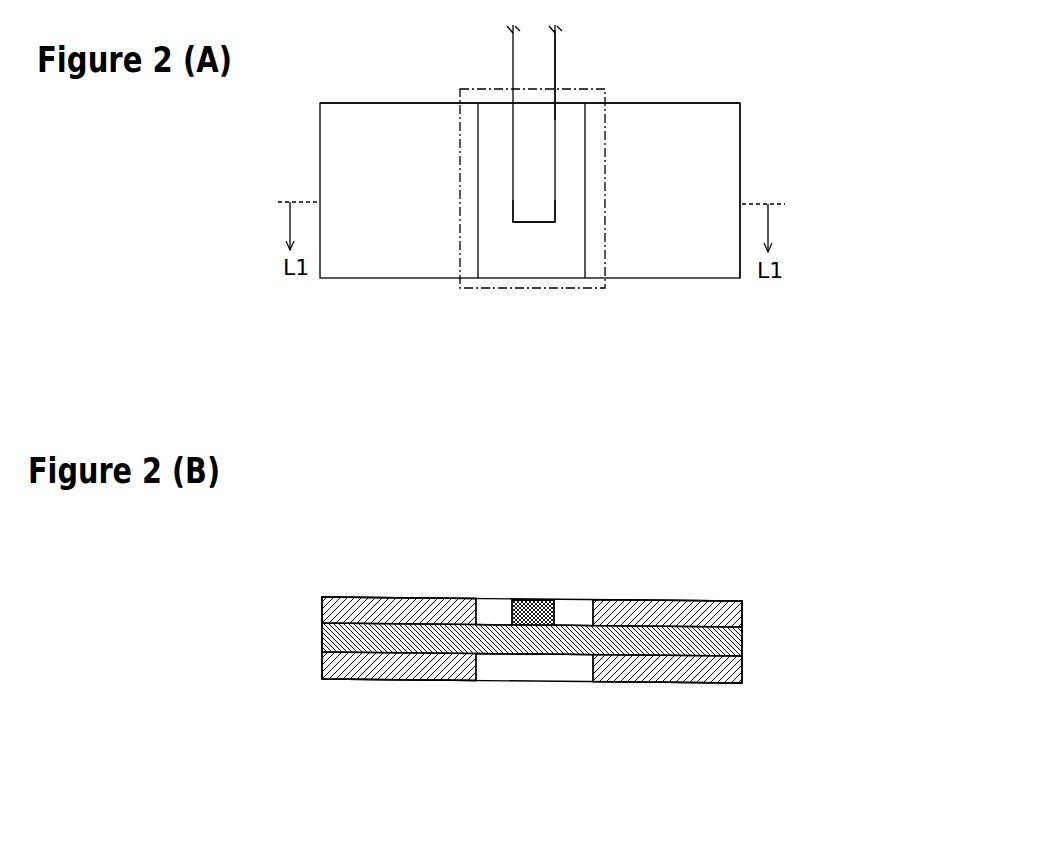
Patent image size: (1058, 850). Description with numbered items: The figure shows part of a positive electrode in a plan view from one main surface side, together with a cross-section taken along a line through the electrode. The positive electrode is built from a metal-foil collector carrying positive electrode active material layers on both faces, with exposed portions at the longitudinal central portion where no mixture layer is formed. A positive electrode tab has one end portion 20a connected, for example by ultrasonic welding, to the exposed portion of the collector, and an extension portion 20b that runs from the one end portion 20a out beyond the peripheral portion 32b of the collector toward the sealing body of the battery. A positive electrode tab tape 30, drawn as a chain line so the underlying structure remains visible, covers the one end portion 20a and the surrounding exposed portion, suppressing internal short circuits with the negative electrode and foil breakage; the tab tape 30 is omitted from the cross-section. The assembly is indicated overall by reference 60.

The one end portion 20a is at (510, 155).
The extension portion 20b is at (557, 68).
The positive electrode tab tape 30 is at (606, 238).
The peripheral portion 32b is at (405, 103).
The bearing assembly 60 is at (826, 480).